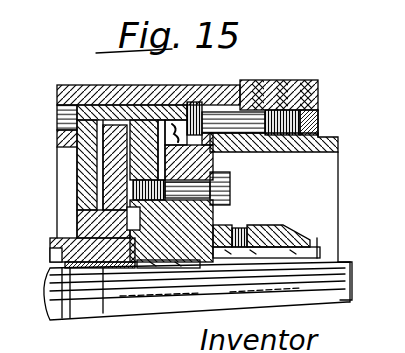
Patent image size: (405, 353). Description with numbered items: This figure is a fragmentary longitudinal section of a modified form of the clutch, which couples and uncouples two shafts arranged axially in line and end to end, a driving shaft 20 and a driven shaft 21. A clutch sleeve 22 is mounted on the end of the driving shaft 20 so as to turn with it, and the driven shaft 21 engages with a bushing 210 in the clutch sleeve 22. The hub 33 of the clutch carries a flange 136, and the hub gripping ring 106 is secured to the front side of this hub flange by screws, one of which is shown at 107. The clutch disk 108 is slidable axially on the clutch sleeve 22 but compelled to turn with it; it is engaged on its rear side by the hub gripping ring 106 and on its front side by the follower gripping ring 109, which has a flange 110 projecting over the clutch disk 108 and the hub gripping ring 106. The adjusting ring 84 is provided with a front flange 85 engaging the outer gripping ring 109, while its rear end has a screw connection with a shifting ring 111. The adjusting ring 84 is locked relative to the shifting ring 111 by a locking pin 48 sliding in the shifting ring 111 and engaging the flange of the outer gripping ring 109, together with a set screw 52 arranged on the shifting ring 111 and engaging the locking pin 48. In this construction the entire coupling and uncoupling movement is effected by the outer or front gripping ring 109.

The driving shaft 20 is at (52, 318).
The driven shaft 21 is at (344, 298).
The clutch sleeve 22 is at (50, 252).
The hub of the clutch 33 is at (298, 236).
The locking pin 48 is at (232, 114).
The set screw 52 is at (281, 134).
The adjusting ring 84 is at (318, 82).
The front flange 85 is at (57, 138).
The hub gripping ring 106 is at (155, 233).
The screw 107 is at (230, 197).
The clutch disk 108 is at (108, 132).
The follower gripping ring 109 is at (80, 198).
The flange 110 is at (133, 112).
The shifting ring 111 is at (327, 147).
The flange of the hub 136 is at (210, 249).
The bushing 210 is at (103, 313).